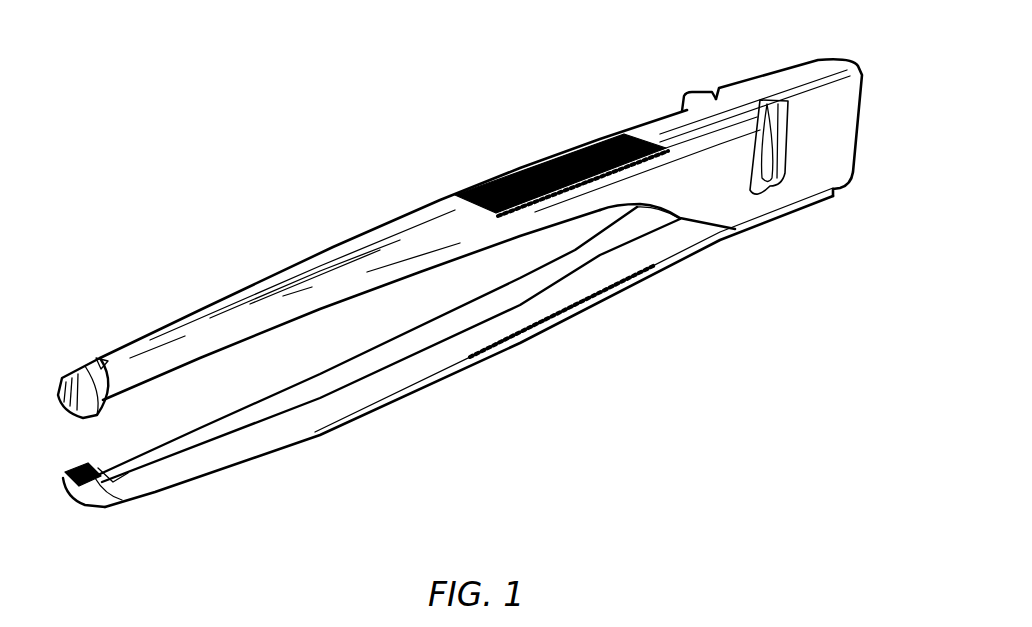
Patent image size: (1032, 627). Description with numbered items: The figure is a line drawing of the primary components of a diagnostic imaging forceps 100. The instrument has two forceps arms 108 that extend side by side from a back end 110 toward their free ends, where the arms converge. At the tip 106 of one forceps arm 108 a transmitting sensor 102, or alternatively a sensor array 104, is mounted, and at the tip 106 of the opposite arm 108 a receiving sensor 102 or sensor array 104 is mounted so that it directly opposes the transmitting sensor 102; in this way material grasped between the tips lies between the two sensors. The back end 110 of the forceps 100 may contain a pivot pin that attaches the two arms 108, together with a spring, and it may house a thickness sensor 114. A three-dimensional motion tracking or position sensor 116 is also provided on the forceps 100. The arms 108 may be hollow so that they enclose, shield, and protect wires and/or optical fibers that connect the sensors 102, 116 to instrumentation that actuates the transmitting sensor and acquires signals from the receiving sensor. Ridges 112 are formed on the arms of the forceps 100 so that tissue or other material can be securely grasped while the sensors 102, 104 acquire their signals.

The diagnostic imaging forceps 100 is at (86, 96).
The sensor 102 is at (80, 361).
The sensor array 104 is at (120, 502).
The tip 106 is at (76, 490).
The forceps arm 108 is at (340, 246).
The back end 110 is at (850, 123).
The ridges 112 is at (68, 420).
The thickness sensor 114 is at (680, 228).
The three-dimensional motion tracking or position sensor 116 is at (653, 200).